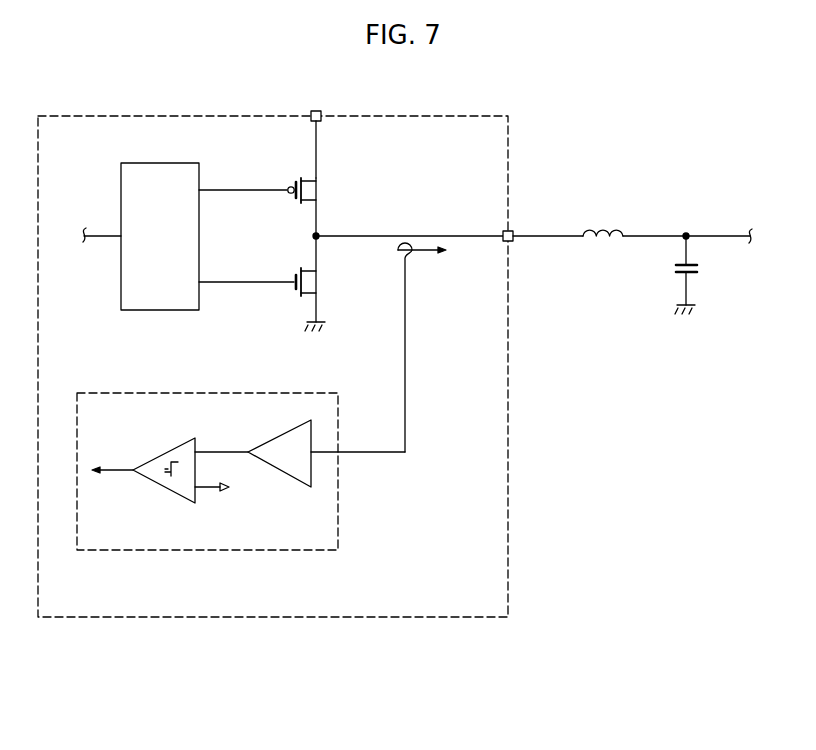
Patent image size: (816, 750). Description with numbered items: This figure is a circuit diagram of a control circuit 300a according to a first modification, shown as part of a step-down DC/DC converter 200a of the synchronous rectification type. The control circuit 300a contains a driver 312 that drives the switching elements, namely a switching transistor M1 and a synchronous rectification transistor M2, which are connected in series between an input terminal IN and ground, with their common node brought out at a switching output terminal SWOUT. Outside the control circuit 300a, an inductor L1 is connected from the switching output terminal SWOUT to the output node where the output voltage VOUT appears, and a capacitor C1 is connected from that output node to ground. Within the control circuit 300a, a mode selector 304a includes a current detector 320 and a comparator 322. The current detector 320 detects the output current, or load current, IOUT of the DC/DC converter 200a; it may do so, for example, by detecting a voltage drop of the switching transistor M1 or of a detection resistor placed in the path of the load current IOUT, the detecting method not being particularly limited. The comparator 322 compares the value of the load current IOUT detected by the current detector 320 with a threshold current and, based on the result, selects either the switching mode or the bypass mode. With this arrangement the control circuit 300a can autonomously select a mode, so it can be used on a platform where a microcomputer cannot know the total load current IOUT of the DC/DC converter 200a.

The DC/DC converter 200a is at (421, 718).
The control circuit 300a is at (296, 618).
The mode selector 304a is at (228, 551).
The driver 312 is at (157, 311).
The current detector 320 is at (283, 487).
The comparator 322 is at (160, 504).
The switching transistor M1 is at (321, 191).
The synchronous rectification transistor M2 is at (321, 283).
The inductor L1 is at (600, 247).
The capacitor C1 is at (673, 270).
The input terminal IN is at (321, 110).
The switching output terminal SWOUT is at (512, 231).
The output voltage VOUT is at (717, 223).
The output current IOUT is at (439, 347).